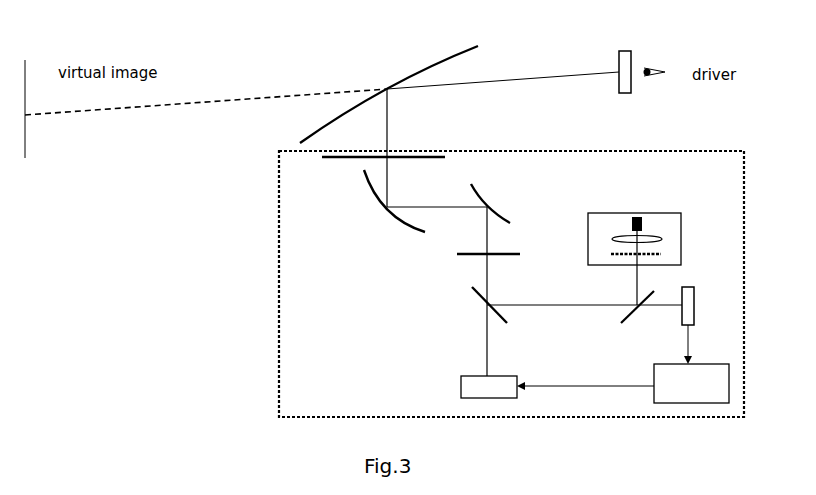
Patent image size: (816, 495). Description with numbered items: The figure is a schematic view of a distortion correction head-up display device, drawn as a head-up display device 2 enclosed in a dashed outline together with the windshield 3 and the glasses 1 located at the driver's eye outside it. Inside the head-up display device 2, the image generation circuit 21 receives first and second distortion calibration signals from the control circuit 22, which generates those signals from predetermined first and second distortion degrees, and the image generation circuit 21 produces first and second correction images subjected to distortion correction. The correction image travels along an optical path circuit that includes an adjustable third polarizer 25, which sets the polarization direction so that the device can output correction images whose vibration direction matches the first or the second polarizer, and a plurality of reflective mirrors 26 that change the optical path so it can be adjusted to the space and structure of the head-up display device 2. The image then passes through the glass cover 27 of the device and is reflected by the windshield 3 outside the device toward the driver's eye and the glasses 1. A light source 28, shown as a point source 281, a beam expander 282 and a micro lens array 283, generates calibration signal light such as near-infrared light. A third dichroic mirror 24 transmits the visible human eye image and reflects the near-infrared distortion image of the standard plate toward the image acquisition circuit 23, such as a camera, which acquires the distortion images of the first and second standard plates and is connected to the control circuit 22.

The glasses 1 is at (630, 60).
The head-up display device 2 is at (278, 275).
The windshield 3 is at (427, 68).
The image generation circuit 21 is at (460, 377).
The control circuit 22 is at (658, 376).
The image acquisition circuit 23 is at (695, 288).
The third dichroic mirror 24 is at (470, 288).
The adjustable third polarizer 25 is at (512, 250).
The reflective mirrors 26 is at (400, 227).
The glass cover 27 is at (428, 150).
The light source 28 is at (588, 246).
The point source 281 is at (641, 224).
The beam expander 282 is at (656, 236).
The micro lens array 283 is at (658, 251).